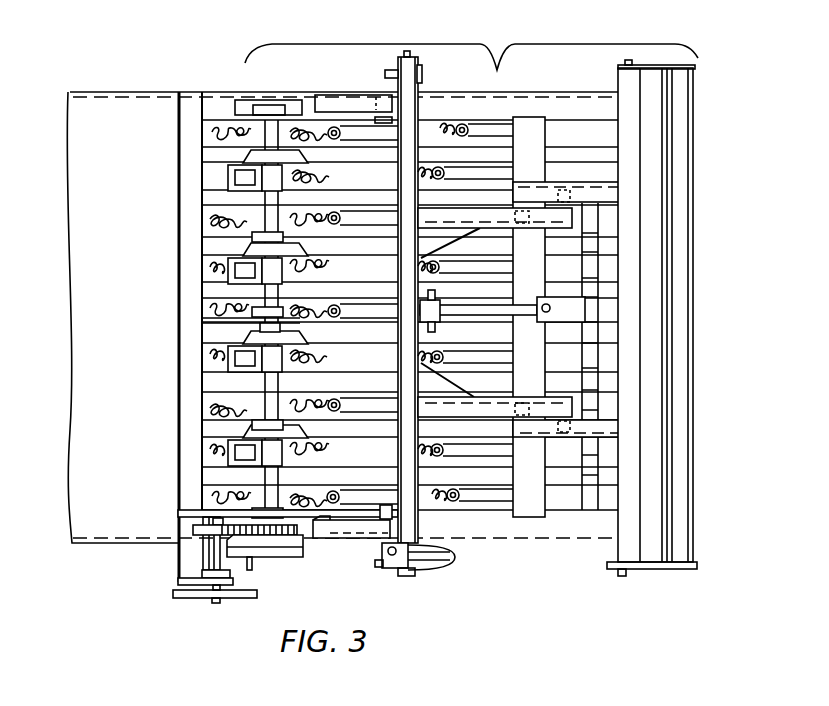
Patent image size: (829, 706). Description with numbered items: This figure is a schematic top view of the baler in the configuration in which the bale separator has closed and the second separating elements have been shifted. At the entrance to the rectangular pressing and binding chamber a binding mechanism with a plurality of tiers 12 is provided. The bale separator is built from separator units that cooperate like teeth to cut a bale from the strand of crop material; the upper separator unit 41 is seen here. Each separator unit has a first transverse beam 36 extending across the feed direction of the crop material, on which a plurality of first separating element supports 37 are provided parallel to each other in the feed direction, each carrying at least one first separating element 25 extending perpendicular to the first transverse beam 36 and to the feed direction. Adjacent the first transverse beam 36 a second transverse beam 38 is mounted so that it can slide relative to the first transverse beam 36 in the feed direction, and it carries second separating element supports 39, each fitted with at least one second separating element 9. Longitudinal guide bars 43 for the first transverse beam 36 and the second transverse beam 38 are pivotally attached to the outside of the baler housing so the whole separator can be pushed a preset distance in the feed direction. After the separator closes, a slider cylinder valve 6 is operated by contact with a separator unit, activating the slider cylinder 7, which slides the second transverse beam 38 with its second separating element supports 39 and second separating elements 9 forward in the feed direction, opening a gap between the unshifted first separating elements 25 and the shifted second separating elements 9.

The slider cylinder valve 6 is at (388, 570).
The slider cylinder 7 is at (638, 307).
The second separating element 9 is at (336, 122).
The tiers 12 is at (262, 147).
The first separating element 25 is at (463, 124).
The first transverse beam 36 is at (518, 273).
The first separating element support 37 is at (495, 173).
The second transverse beam 38 is at (452, 548).
The second separating element support 39 is at (362, 135).
The upper separator unit 41 is at (471, 286).
The longitudinal guide bars 43 is at (498, 217).